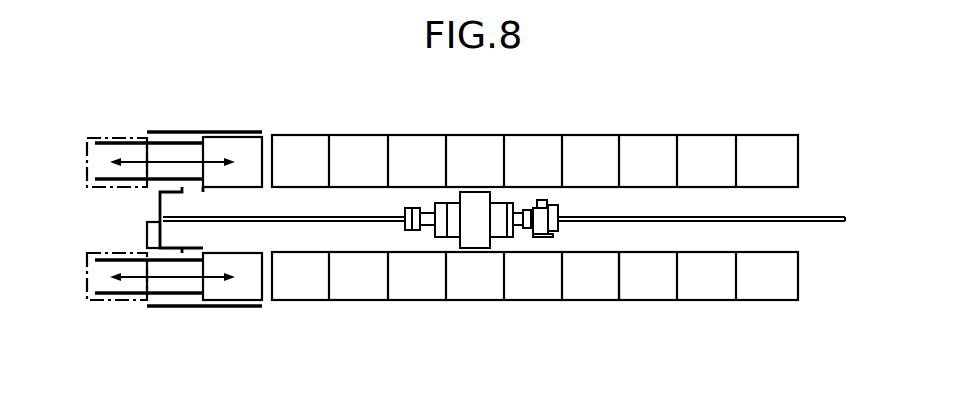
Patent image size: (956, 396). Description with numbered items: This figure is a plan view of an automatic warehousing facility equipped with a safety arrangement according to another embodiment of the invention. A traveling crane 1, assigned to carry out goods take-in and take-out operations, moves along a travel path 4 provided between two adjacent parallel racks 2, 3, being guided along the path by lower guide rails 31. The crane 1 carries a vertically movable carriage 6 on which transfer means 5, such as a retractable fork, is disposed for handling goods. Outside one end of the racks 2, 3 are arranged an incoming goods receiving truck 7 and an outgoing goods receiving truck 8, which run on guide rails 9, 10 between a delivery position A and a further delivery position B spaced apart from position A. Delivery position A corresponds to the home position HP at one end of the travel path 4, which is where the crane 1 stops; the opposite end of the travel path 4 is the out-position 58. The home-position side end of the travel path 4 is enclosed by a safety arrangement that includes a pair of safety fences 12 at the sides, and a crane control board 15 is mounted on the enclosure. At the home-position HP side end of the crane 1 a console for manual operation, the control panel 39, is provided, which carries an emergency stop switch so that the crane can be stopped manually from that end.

The traveling crane 1 is at (435, 240).
The rack 2 is at (642, 157).
The rack 3 is at (591, 277).
The travel path 4 is at (632, 233).
The transfer means 5 is at (477, 230).
The vertically movable carriage 6 is at (497, 215).
The incoming goods receiving truck 7 is at (252, 160).
The outgoing goods receiving truck 8 is at (252, 280).
The guide rails 9 is at (174, 147).
The guide rails 10 is at (160, 308).
The safety fences 12 is at (182, 187).
The crane control board 15 is at (147, 233).
The lower guide rails 31 is at (705, 222).
The control panel 39 is at (413, 233).
The out-position 58 is at (779, 208).
The delivery position A is at (256, 128).
The delivery position B is at (102, 134).
The home position HP is at (226, 237).